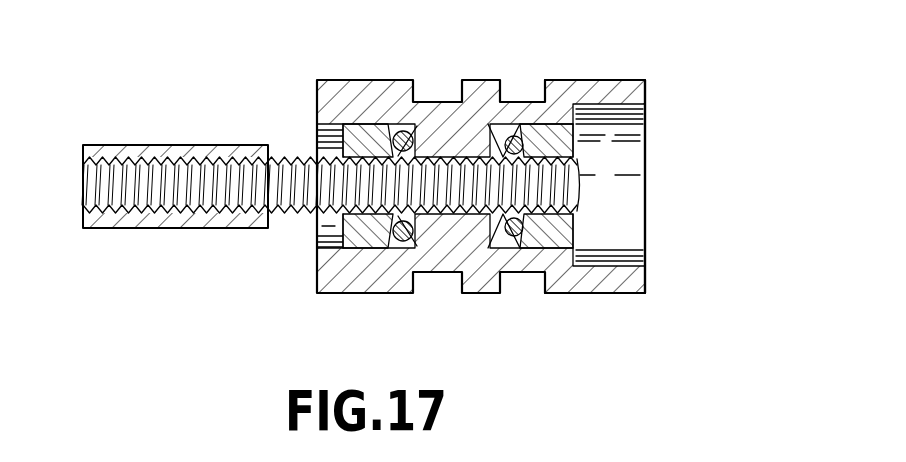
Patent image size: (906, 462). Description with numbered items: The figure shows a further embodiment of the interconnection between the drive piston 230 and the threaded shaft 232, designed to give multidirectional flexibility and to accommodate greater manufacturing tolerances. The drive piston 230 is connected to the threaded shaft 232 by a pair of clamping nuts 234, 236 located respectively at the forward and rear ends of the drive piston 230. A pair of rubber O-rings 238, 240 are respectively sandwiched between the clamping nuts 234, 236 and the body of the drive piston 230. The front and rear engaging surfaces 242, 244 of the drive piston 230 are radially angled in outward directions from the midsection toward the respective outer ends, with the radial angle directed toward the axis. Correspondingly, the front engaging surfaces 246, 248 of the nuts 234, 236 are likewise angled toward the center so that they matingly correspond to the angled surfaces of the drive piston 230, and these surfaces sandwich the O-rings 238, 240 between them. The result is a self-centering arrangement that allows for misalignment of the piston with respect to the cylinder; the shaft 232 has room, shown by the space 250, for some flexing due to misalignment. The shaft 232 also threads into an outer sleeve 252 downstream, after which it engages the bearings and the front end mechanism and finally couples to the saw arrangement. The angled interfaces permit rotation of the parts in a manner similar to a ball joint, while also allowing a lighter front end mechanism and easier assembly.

The drive piston 230 is at (613, 80).
The threaded shaft 232 is at (298, 214).
The clamping nut 234 is at (573, 152).
The clamping nut 236 is at (365, 142).
The O-ring 238 is at (515, 238).
The O-ring 240 is at (407, 250).
The front engaging surface of the drive piston 242 is at (420, 133).
The rear engaging surface of the drive piston 244 is at (500, 120).
The front engaging surface of the nut 246 is at (411, 134).
The front engaging surface of the nut 248 is at (560, 140).
The space 250 is at (316, 151).
The outer sleeve 252 is at (128, 146).